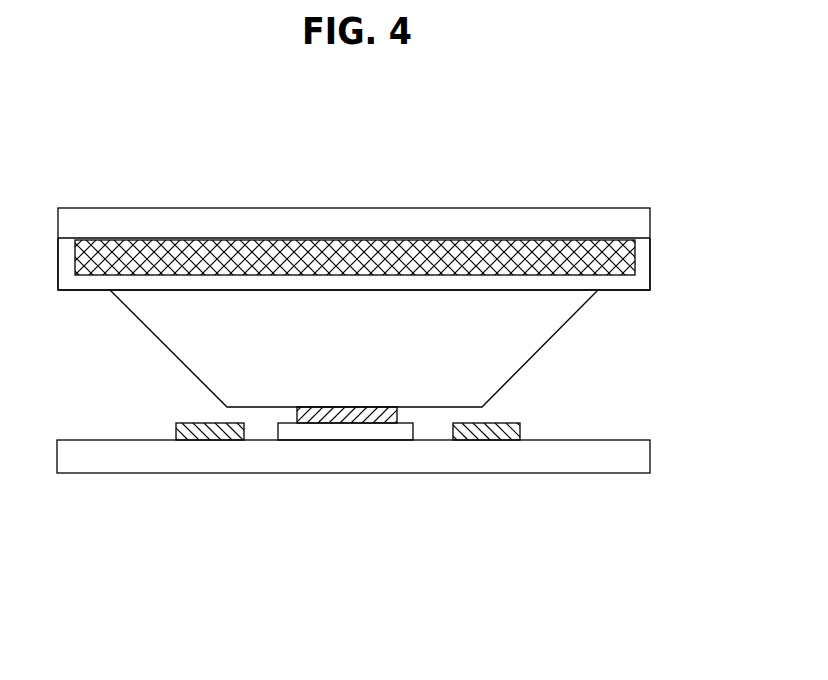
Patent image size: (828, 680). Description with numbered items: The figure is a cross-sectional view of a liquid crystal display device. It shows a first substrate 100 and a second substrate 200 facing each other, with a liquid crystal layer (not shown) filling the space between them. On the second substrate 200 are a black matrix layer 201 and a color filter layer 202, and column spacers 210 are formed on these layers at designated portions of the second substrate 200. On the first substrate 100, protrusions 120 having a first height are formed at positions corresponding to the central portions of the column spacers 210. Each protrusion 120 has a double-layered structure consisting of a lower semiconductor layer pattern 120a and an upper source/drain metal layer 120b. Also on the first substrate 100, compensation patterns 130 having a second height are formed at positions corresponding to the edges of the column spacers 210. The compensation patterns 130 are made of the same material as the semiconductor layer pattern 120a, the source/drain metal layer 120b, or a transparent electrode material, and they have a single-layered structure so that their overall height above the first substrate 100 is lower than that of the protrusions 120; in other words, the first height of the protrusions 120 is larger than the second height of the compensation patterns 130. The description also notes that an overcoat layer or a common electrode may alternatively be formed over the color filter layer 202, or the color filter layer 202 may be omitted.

The first substrate 100 is at (643, 458).
The protrusions 120 is at (350, 489).
The lower semiconductor layer pattern 120a is at (387, 430).
The upper source/drain metal layer 120b is at (415, 524).
The compensation patterns 130 is at (510, 440).
The second substrate 200 is at (650, 222).
The black matrix layer 201 is at (635, 252).
The color filter layer 202 is at (650, 283).
The column spacers 210 is at (545, 330).